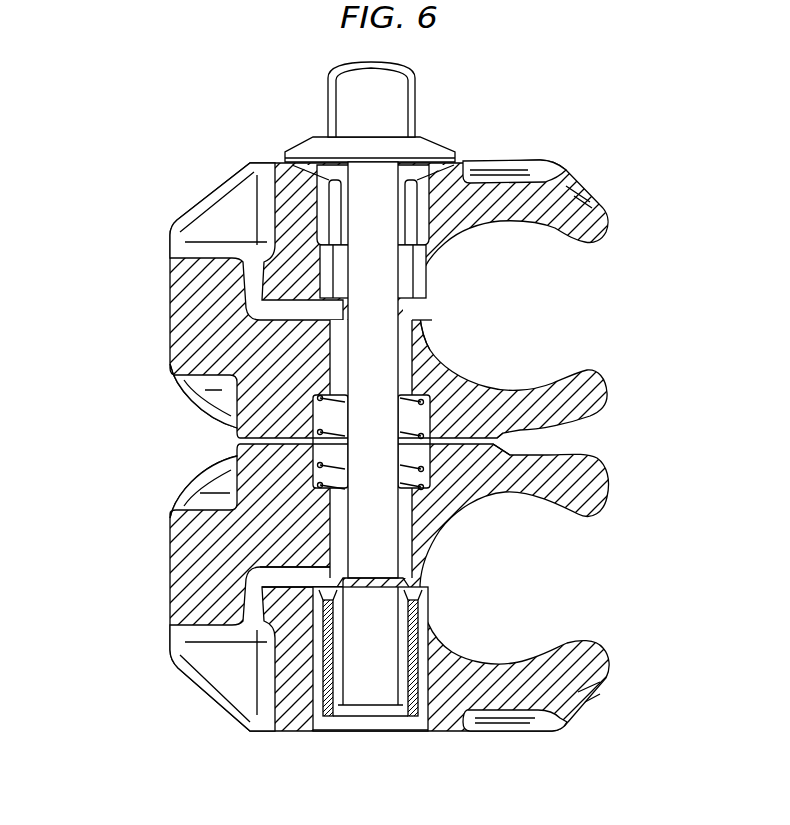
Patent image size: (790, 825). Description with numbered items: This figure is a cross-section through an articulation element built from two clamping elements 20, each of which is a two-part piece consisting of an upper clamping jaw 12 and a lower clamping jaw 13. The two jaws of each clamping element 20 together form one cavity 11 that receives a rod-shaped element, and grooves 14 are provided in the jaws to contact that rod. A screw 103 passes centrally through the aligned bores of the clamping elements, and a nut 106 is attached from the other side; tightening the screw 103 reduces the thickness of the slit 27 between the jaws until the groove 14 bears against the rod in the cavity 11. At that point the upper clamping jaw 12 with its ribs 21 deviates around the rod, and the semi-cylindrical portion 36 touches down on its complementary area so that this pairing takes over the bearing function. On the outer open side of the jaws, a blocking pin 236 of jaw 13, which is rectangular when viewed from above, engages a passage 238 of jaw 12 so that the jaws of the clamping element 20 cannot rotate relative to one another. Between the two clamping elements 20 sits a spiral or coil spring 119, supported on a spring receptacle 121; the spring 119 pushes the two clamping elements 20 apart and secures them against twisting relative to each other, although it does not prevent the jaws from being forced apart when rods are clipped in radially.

The cavity 11 is at (622, 296).
The clamping jaw 12 is at (291, 182).
The clamping jaw 13 is at (580, 505).
The groove 14 is at (540, 224).
The clamping element 20 is at (133, 183).
The rib 21 is at (212, 683).
The slit 27 is at (418, 310).
The semi-cylindrical portion 36 is at (255, 574).
The screw 103 is at (414, 94).
The nut 106 is at (445, 737).
The spring 119 is at (458, 380).
The spring receptacle 121 is at (577, 408).
The blocking pin 236 is at (180, 294).
The passage 238 is at (197, 383).